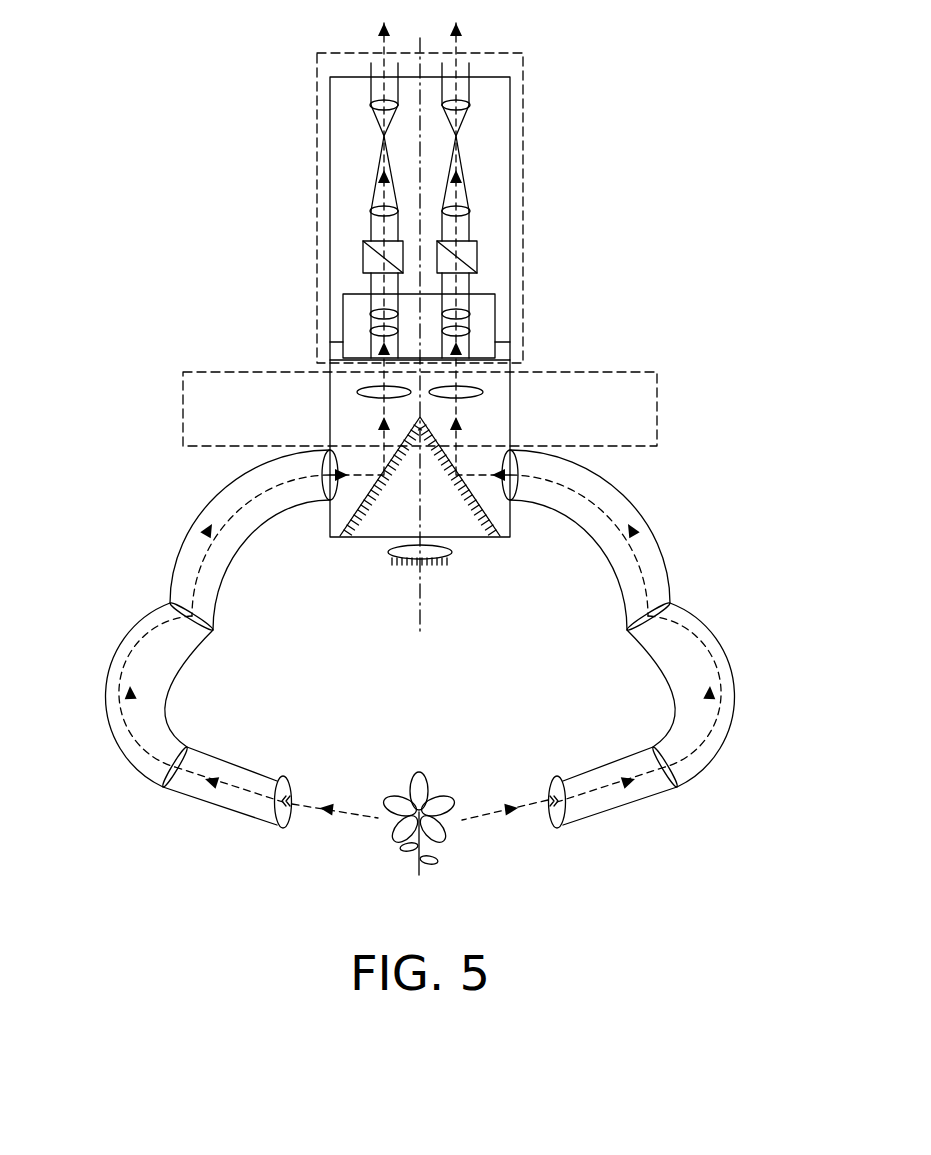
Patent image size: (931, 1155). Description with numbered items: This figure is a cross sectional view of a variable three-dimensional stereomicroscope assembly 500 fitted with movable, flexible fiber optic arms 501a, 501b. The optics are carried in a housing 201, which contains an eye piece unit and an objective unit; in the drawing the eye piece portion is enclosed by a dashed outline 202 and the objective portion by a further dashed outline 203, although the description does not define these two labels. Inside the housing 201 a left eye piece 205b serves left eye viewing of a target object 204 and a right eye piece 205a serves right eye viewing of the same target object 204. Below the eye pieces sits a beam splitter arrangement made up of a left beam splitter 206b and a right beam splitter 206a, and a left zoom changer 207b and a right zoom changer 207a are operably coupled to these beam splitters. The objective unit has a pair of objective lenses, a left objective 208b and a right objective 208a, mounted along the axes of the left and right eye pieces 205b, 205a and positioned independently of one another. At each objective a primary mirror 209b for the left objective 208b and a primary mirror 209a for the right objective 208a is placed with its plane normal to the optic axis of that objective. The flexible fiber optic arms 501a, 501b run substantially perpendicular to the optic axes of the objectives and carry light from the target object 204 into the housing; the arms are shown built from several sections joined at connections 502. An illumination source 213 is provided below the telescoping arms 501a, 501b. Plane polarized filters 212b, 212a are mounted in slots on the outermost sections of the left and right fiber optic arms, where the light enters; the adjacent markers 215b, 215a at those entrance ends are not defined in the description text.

The optical measurement system 500 is at (701, 194).
The housing 201 is at (330, 88).
The optical unit 202 is at (317, 133).
The lens unit 203 is at (192, 372).
The target object 204 is at (448, 840).
The right eye piece 205a is at (469, 63).
The left eye piece 205b is at (371, 63).
The right beam splitter 206a is at (477, 258).
The left beam splitter 206b is at (363, 258).
The right zoom changer 207a is at (497, 332).
The left zoom changer 207b is at (343, 332).
The right objective 208a is at (483, 391).
The left objective 208b is at (357, 391).
The primary mirror 209a is at (495, 518).
The primary mirror 209b is at (345, 518).
The plane polarized filter 212a is at (547, 823).
The plane polarized filter 212b is at (290, 828).
The illumination source 213 is at (435, 560).
The filter 215a is at (552, 797).
The filter 215b is at (330, 773).
The flexible fiber optic arm 501a is at (653, 568).
The flexible fiber optic arm 501b is at (187, 568).
The joint 502 is at (205, 632).